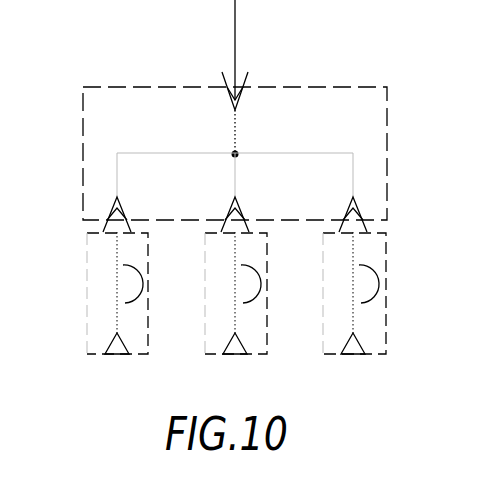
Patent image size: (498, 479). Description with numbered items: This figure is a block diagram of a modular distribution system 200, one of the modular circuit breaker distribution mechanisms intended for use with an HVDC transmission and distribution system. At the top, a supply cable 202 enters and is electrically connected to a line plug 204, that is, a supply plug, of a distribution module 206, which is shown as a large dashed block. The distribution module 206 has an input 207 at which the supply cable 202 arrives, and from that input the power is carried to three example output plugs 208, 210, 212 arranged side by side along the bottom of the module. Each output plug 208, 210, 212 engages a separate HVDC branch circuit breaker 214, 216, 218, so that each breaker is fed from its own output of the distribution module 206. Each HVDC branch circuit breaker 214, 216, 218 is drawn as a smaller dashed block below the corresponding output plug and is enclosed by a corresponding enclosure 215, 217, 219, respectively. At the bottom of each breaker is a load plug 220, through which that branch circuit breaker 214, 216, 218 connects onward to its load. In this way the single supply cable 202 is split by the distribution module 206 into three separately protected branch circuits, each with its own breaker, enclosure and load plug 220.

The modular distribution system 200 is at (121, 63).
The supply cable 202 is at (232, 36).
The line plug 204 is at (244, 75).
The distribution module 206 is at (307, 105).
The input 207 is at (244, 102).
The output plug 208 is at (121, 202).
The output plug 210 is at (239, 202).
The output plug 212 is at (359, 199).
The HVDC branch circuit breaker 214 is at (129, 268).
The enclosure 215 is at (86, 355).
The HVDC branch circuit breaker 216 is at (247, 268).
The enclosure 217 is at (204, 355).
The HVDC branch circuit breaker 218 is at (365, 268).
The enclosure 219 is at (322, 355).
The load plug 220 is at (122, 342).